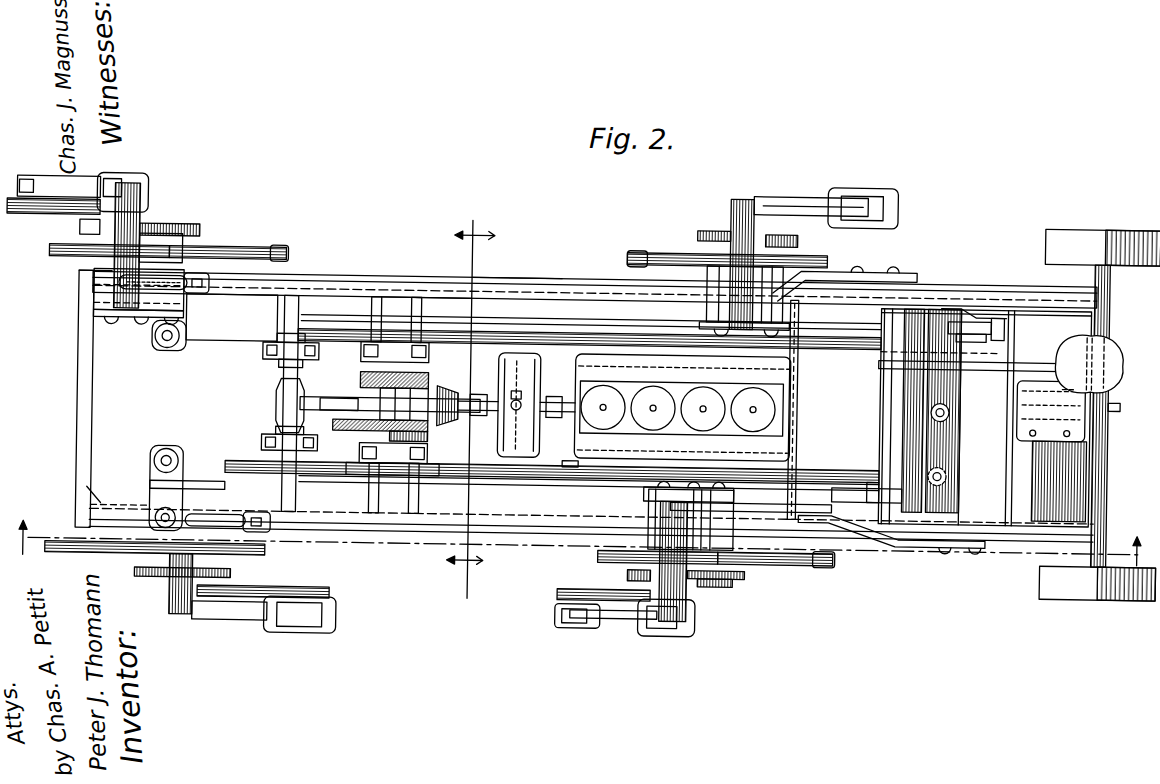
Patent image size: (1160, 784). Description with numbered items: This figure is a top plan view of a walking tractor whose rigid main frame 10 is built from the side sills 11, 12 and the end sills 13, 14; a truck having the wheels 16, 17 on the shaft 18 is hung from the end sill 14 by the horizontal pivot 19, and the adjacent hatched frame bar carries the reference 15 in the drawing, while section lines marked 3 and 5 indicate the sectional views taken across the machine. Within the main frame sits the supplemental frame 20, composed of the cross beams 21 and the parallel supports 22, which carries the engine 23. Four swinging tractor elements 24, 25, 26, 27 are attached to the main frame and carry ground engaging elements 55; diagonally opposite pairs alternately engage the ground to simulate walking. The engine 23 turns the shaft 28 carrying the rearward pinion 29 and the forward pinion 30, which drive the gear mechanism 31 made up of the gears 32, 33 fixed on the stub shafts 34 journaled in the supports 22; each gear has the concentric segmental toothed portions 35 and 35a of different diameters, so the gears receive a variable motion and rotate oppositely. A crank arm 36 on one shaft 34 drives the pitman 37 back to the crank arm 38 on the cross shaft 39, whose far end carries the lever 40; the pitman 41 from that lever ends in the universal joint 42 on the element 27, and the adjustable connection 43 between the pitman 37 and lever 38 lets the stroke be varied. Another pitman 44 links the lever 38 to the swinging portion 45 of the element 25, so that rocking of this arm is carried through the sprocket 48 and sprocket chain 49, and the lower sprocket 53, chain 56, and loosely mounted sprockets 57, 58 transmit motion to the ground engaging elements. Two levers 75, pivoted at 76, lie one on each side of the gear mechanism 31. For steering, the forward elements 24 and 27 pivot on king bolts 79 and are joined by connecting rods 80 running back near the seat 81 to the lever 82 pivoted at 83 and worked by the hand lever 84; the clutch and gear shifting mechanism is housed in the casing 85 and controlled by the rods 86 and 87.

The section line 3- 3 is at (577, 545).
The section line 5- 5 is at (470, 404).
The main frame 10 is at (585, 281).
The side sill 11 is at (521, 535).
The side sill 12 is at (508, 280).
The end sill 13 is at (88, 413).
The end sill 14 is at (1078, 463).
The rear frame bar 15 is at (1108, 500).
The wheel 16 is at (1102, 593).
The wheel 17 is at (1097, 228).
The shaft 18 is at (1086, 430).
The horizontal pivot 19 is at (1122, 393).
The supplemental frame 20 is at (577, 353).
The cross beam 21 is at (283, 388).
The parallel support 22 is at (537, 356).
The engine 23 is at (791, 432).
The tractor element 24 is at (172, 600).
The tractor element 25 is at (690, 613).
The tractor element 26 is at (794, 199).
The tractor element 27 is at (130, 213).
The shaft 28 is at (472, 418).
The rearward pinion 29 is at (443, 388).
The forward pinion 30 is at (407, 466).
The gear mechanism 31 is at (358, 394).
The gear 32 is at (350, 468).
The gear 33 is at (366, 376).
The shaft 34 is at (400, 346).
The segmental toothed portion 35 is at (356, 432).
The segmental toothed portion 35a is at (390, 402).
The crank arm 36 is at (378, 479).
The pitman 37 is at (571, 468).
The crank arm 38 is at (874, 479).
The shaft 39 is at (895, 407).
The lever 40 is at (880, 267).
The pitman 41 is at (422, 280).
The universal joint 42 is at (197, 279).
The adjustable connection 43 is at (850, 500).
The pitman 44 is at (753, 506).
The swinging portion 45 is at (646, 493).
The sprocket 48 is at (58, 265).
The sprocket chain 49 is at (255, 254).
The sprocket 53 is at (566, 605).
The ground engaging element 55 is at (140, 182).
The sprocket chain 56 is at (60, 223).
The sprocket 57 is at (640, 618).
The sprocket 58 is at (190, 232).
The lever 75 is at (318, 340).
The pivot 76 is at (264, 364).
The king bolt 79 is at (178, 294).
The connecting rod 80 is at (212, 346).
The seat 81 is at (1112, 352).
The lever 82 is at (949, 465).
The pivot 83 is at (950, 410).
The hand lever 84 is at (1007, 300).
The casing 85 is at (524, 392).
The rod 86 is at (848, 358).
The rod 87 is at (850, 452).